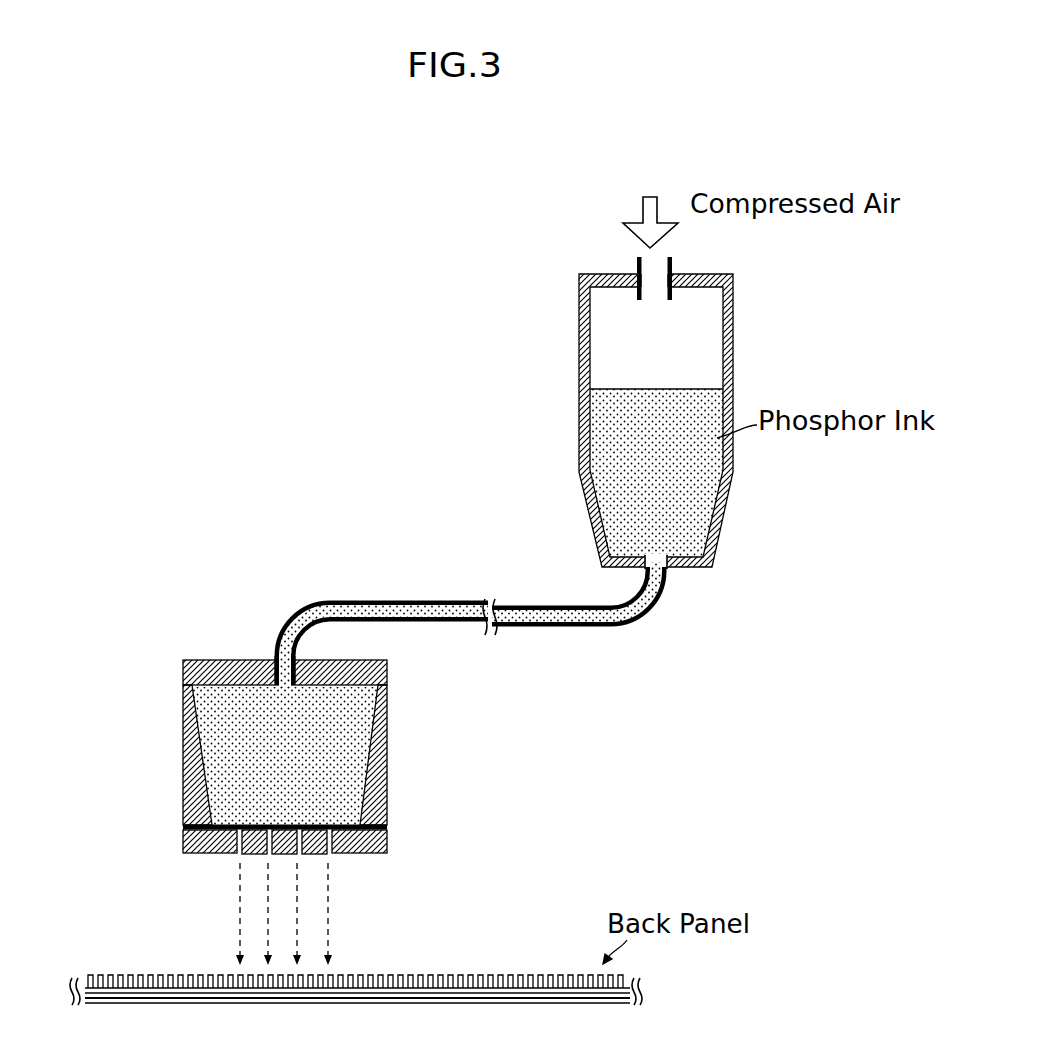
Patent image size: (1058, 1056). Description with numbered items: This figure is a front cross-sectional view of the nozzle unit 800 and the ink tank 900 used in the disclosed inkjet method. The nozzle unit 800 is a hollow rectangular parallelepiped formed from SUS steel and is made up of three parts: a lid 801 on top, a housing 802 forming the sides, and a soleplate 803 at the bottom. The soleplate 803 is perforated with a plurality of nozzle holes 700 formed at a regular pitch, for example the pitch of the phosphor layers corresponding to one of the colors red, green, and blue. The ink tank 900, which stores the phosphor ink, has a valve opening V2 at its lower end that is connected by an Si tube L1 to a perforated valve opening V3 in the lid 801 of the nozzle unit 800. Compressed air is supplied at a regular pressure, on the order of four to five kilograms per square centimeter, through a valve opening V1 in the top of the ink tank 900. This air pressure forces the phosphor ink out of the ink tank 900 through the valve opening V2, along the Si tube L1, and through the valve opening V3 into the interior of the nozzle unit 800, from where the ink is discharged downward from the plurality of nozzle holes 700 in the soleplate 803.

The ink tank 900 is at (743, 382).
The valve opening V1 is at (673, 266).
The valve opening V2 is at (679, 568).
The Si tube L1 is at (596, 625).
The valve opening V3 is at (274, 660).
The nozzle unit 800 is at (324, 768).
The lid 801 is at (387, 661).
The housing 802 is at (387, 797).
The soleplate 803 is at (387, 843).
The nozzle holes 700 is at (334, 861).